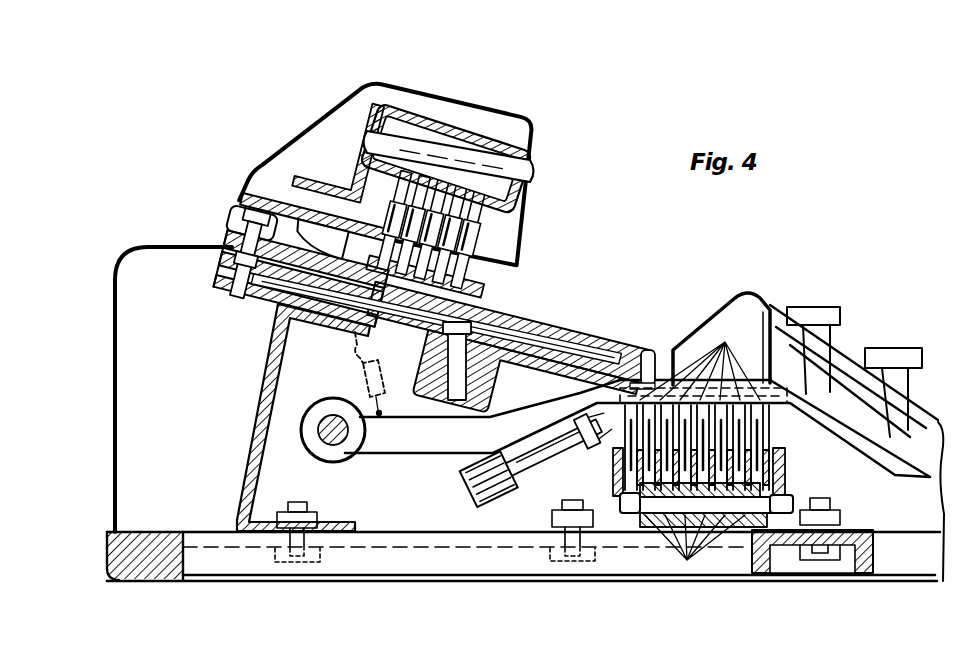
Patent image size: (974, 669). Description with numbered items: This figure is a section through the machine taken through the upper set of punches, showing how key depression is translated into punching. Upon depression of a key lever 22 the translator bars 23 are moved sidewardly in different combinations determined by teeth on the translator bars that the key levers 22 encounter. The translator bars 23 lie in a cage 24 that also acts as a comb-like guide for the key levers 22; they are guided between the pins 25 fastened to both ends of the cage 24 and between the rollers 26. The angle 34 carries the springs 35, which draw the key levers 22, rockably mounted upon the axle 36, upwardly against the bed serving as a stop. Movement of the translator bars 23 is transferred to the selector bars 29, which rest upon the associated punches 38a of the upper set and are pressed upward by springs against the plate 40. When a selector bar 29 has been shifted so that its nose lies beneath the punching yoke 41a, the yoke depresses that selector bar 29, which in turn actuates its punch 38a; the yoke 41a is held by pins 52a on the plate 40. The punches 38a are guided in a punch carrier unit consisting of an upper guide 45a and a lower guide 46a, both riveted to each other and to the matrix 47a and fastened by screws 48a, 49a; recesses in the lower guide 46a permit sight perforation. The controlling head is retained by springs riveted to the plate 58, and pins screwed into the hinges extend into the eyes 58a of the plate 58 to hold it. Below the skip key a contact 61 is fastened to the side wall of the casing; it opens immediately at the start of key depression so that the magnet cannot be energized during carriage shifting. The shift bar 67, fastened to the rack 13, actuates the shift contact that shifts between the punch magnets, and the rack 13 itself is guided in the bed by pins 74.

The rack 13 is at (512, 333).
The key lever 22 is at (407, 450).
The translator bar 23 is at (779, 365).
The cage 24 is at (787, 472).
The pin 25 is at (757, 433).
The roller 26 is at (687, 560).
The selector bar 29 is at (431, 230).
The angle 34 is at (253, 423).
The spring 35 is at (360, 382).
The axle 36 is at (320, 438).
The punch 38a is at (425, 276).
The plate 40 is at (395, 163).
The punching yoke 41a is at (425, 108).
The upper guide 45a is at (247, 254).
The lower guide 46a is at (617, 357).
The matrix 47a is at (300, 278).
The screw 48a is at (640, 383).
The screw 49a is at (252, 223).
The pin 52a is at (483, 163).
The plate 58 is at (315, 217).
The eye 58a is at (320, 239).
The contact 61 is at (567, 463).
The shift bar 67 is at (452, 387).
The pin 74 is at (436, 318).